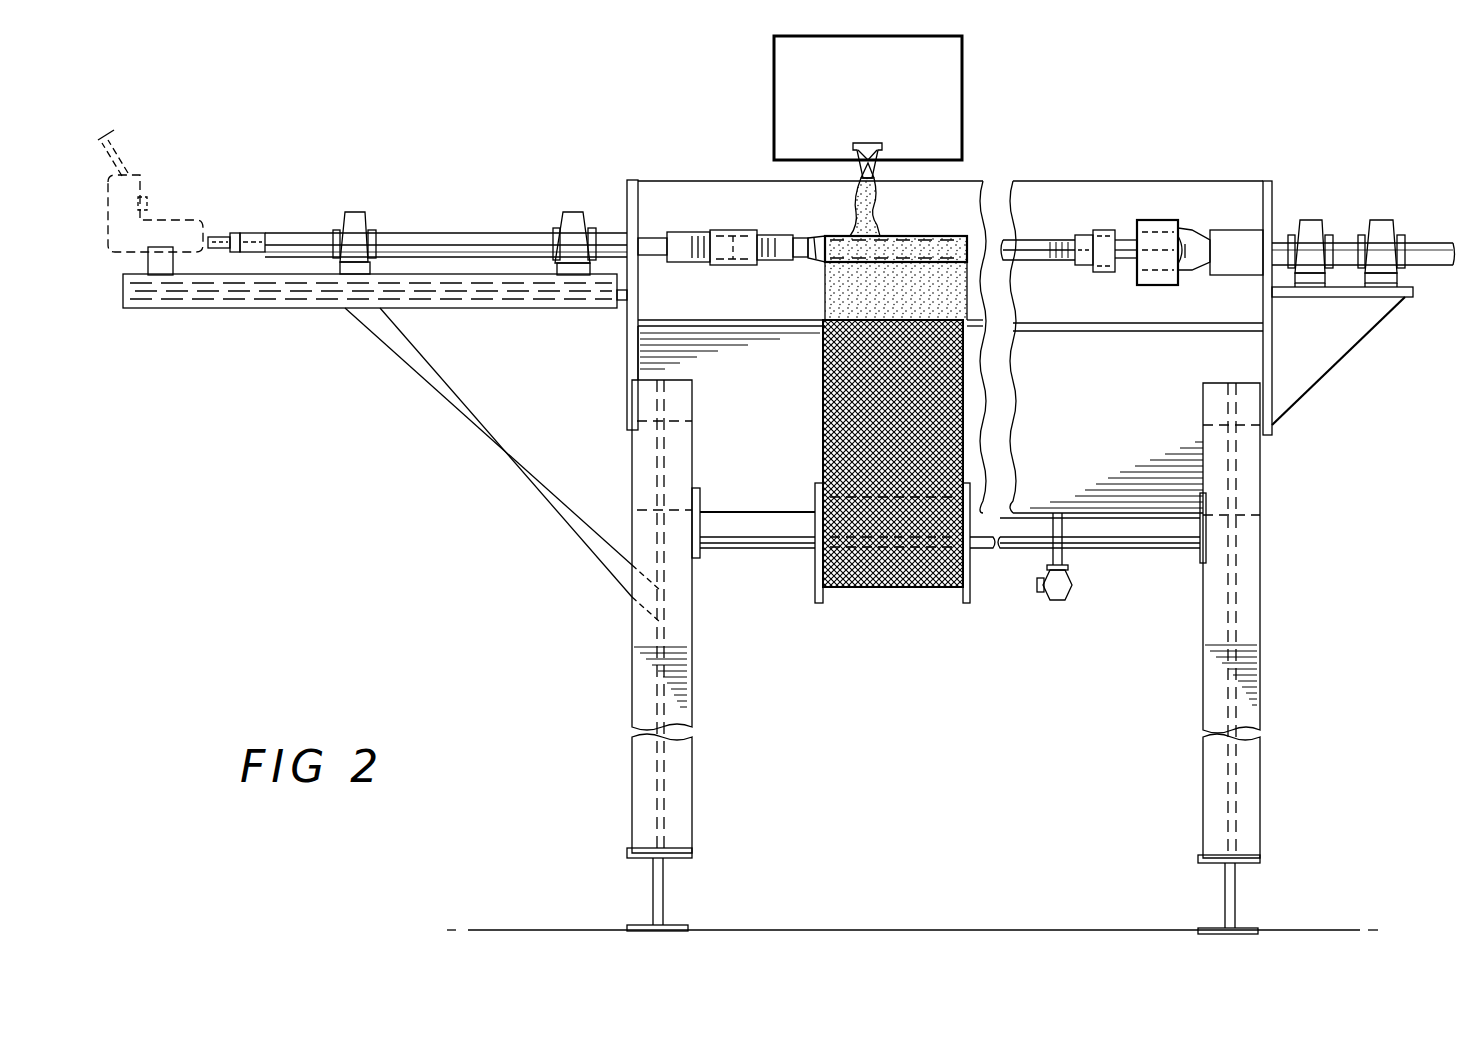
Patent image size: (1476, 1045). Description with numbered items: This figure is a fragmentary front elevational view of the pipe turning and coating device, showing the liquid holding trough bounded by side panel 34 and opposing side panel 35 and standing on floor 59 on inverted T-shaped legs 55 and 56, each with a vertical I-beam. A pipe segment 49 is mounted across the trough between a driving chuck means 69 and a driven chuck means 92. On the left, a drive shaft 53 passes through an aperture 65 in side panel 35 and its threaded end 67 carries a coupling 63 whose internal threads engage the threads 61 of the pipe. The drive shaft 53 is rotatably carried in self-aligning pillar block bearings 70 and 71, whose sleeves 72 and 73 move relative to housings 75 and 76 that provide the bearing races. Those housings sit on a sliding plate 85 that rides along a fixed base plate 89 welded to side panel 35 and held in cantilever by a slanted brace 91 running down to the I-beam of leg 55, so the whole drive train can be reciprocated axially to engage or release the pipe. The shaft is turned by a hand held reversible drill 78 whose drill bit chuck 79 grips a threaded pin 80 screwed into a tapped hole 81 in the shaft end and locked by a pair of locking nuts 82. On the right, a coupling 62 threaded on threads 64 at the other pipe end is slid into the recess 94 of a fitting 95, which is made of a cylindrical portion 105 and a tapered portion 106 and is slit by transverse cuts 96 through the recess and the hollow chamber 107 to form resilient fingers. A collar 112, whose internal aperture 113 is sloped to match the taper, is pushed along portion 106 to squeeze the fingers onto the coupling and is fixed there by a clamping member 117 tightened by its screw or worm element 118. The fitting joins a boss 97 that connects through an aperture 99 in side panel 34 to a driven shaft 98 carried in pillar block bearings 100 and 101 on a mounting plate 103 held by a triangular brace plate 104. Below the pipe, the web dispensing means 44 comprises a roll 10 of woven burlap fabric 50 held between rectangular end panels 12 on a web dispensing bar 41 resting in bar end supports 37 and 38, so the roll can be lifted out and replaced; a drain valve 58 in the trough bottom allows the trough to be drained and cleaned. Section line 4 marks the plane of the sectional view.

The section line 4- 4 is at (800, 240).
The roll of woven burlap fabric 10 is at (922, 590).
The rectangular end panels 12 is at (815, 575).
The side panel 34 is at (1272, 183).
The opposing side panel 35 is at (628, 185).
The bar end support 37 is at (712, 518).
The bar end support 38 is at (1200, 518).
The web dispensing bar 41 is at (1113, 548).
The web dispensing means 44 is at (905, 594).
The pipe segment 49 is at (790, 236).
The woven burlap fabric 50 is at (822, 422).
The drive shaft 53 is at (468, 232).
The leg 55 is at (632, 672).
The leg 56 is at (1203, 672).
The drain valve 58 is at (1070, 598).
The floor 59 is at (600, 925).
The threads 61 is at (773, 262).
The coupling 62 is at (1076, 238).
The coupling 63 is at (727, 266).
The threads 64 is at (1062, 262).
The aperture 65 is at (640, 234).
The threaded end 67 is at (694, 262).
The driving chuck means 69 is at (722, 212).
The pillar block bearing 70 is at (352, 210).
The pillar block bearing 71 is at (563, 210).
The sleeve 72 is at (374, 230).
The sleeve 73 is at (552, 228).
The housing 75 is at (346, 215).
The housing 76 is at (576, 228).
The hand held reversible drill 78 is at (133, 172).
The drill bit chuck 79 is at (222, 236).
The threaded pin 80 is at (235, 233).
The tapped and threaded hole 81 is at (255, 233).
The locking nuts 82 is at (232, 258).
The sliding plate 85 is at (125, 280).
The base plate 89 is at (160, 290).
The slanted brace 91 is at (478, 452).
The driven chuck means 92 is at (1155, 405).
The recess 94 is at (1105, 235).
The fitting 95 is at (1127, 222).
The transverse cuts 96 is at (1090, 268).
The boss 97 is at (1243, 242).
The driven shaft 98 is at (1343, 242).
The aperture 99 is at (1255, 288).
The pillar block bearing 100 is at (1310, 218).
The pillar block bearing 101 is at (1388, 218).
The mounting plate 103 is at (1410, 300).
The triangular brace plate 104 is at (1322, 348).
The cylindrical portion 105 is at (1097, 238).
The tapered portion 106 is at (1200, 240).
The hollow chamber 107 is at (1130, 278).
The collar 112 is at (1170, 288).
The internal aperture 113 is at (1188, 285).
The clamping member 117 is at (1190, 240).
The adjustable screw or worm element 118 is at (1188, 238).